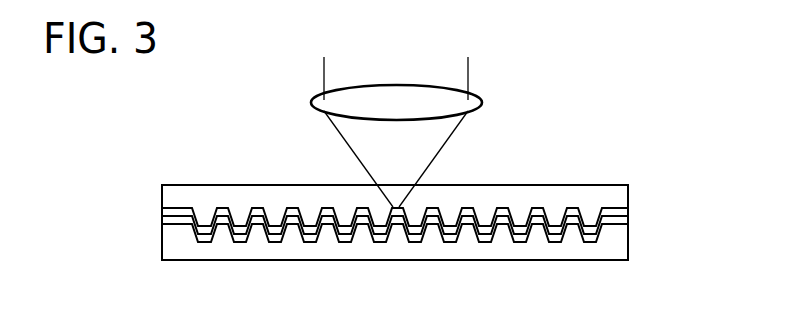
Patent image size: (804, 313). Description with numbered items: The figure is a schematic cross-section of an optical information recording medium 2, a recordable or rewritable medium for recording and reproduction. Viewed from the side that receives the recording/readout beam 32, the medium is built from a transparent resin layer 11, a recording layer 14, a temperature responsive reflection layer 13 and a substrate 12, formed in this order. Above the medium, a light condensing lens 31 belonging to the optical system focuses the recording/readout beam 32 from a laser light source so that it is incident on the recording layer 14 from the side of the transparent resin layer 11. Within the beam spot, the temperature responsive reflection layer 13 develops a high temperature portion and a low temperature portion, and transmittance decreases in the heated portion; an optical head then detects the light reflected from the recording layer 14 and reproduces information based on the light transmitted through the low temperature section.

The optical information recording medium 2 is at (713, 173).
The transparent resin layer 11 is at (620, 200).
The substrate 12 is at (620, 250).
The temperature responsive reflection layer 13 is at (620, 222).
The recording layer 14 is at (620, 213).
The light condensing lens 31 is at (472, 102).
The recording/readout beam 32 is at (425, 147).